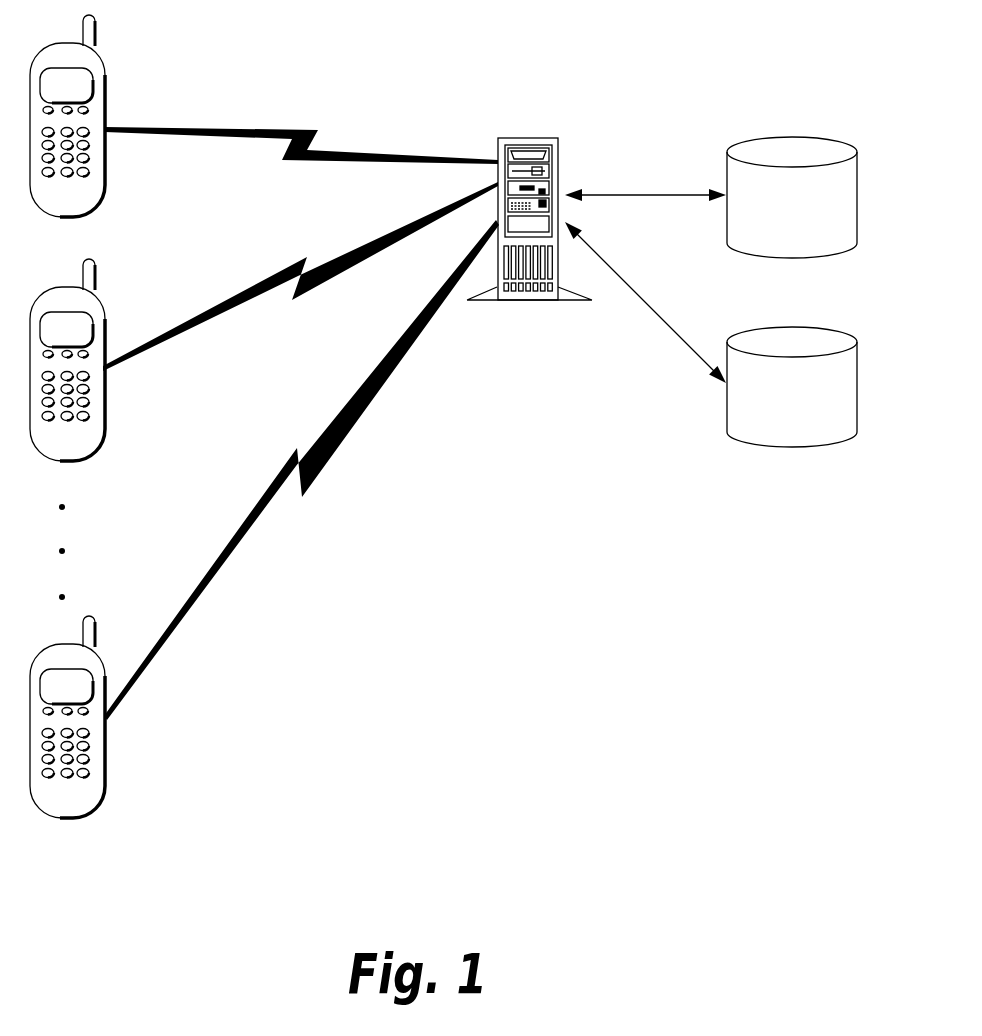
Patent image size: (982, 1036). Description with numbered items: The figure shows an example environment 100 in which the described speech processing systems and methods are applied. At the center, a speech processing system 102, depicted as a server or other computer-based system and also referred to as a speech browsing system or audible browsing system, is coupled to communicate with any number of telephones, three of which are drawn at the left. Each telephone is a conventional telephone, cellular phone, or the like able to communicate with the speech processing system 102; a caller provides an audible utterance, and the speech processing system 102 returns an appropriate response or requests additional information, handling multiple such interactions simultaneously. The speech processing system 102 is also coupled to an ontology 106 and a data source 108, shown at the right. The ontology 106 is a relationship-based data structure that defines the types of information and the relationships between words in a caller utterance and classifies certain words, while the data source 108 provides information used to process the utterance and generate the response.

The environment 100 is at (652, 40).
The speech processing system 102 is at (528, 138).
The ontology 106 is at (793, 133).
The data source 108 is at (793, 325).